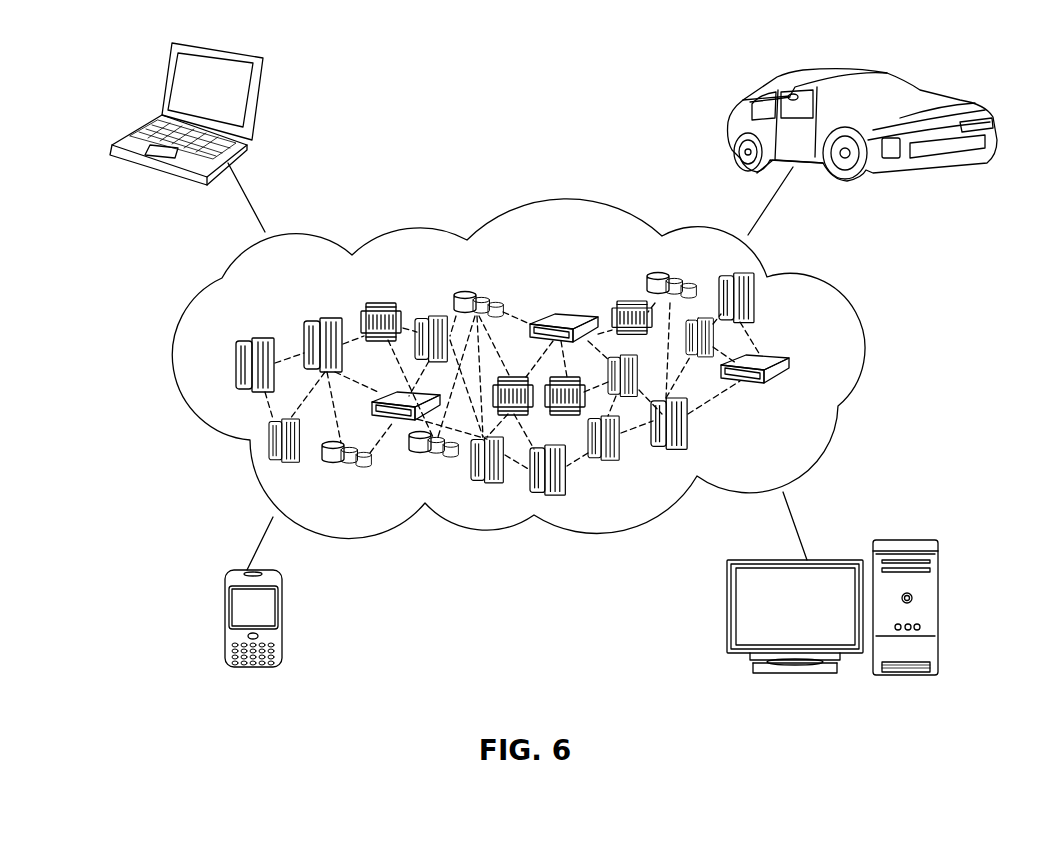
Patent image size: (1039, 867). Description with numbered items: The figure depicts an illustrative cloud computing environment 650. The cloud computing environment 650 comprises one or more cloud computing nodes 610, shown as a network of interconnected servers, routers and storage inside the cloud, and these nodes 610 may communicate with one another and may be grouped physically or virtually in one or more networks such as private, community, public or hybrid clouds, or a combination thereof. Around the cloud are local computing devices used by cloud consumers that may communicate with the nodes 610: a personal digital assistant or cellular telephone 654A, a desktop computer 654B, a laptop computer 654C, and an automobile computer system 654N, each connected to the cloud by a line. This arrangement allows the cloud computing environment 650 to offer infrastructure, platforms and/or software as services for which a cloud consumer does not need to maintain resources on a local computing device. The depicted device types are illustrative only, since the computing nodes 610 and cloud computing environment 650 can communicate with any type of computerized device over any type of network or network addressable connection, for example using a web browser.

The cloud computing nodes 610 is at (824, 365).
The cloud computing environment 650 is at (843, 293).
The personal digital assistant or cellular telephone 654A is at (227, 622).
The desktop computer 654B is at (910, 540).
The laptop computer 654C is at (260, 102).
The automobile computer system 654N is at (737, 110).